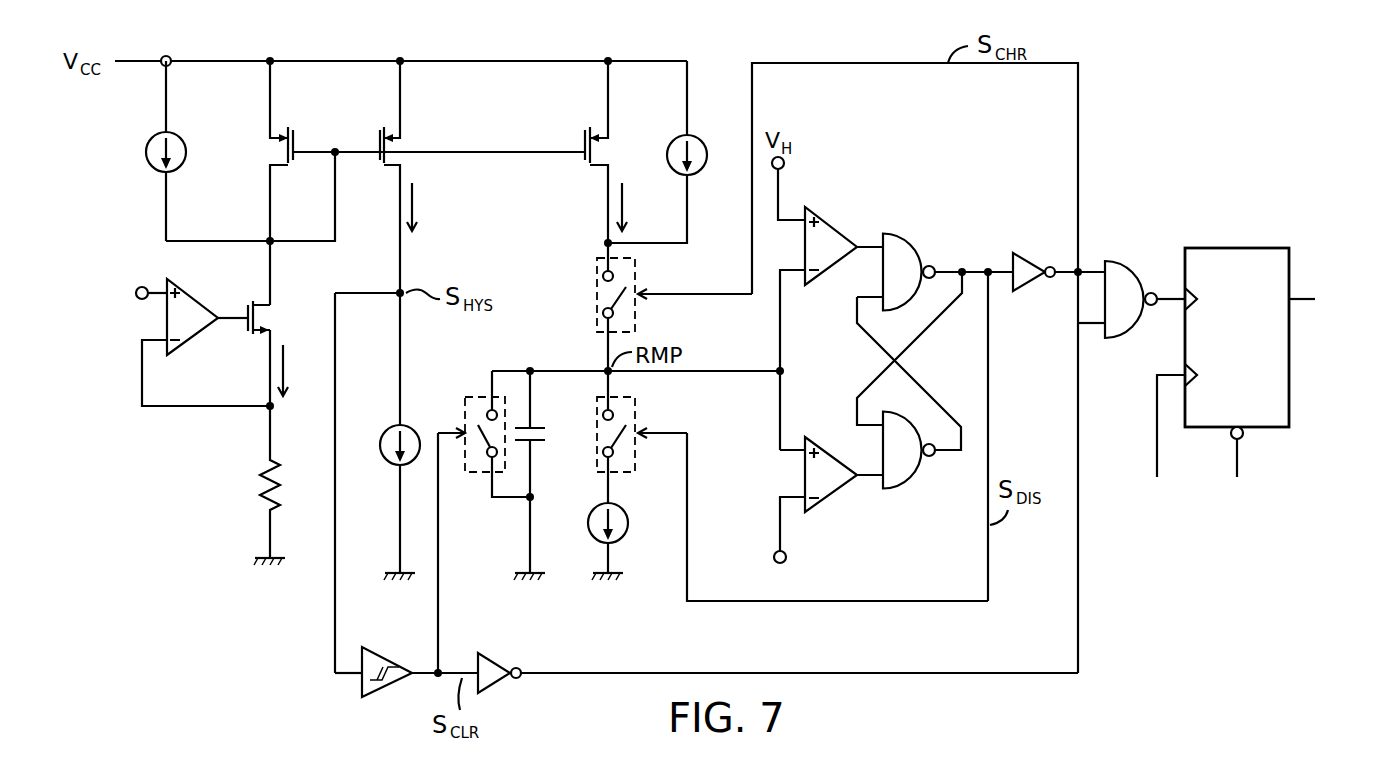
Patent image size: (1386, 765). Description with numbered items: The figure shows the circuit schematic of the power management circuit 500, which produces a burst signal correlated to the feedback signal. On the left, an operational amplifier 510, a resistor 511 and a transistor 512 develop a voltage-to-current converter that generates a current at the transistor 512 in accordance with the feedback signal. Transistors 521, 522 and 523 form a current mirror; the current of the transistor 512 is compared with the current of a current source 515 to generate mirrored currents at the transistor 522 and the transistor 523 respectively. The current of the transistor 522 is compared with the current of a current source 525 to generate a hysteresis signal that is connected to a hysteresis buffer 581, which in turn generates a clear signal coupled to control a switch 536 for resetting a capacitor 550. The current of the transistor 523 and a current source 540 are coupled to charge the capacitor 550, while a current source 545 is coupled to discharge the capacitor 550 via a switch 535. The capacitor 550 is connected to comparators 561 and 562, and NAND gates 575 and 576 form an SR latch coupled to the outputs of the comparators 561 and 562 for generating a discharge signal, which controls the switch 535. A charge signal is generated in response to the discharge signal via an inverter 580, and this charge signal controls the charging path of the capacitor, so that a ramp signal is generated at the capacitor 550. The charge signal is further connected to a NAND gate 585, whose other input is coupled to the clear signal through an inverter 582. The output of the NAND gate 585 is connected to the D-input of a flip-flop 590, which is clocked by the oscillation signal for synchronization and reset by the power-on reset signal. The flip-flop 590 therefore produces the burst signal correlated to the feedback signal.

The power management circuit 500 is at (1258, 67).
The operational amplifier 510 is at (192, 295).
The resistor 511 is at (259, 479).
The transistor 512 is at (268, 313).
The current source 515 is at (147, 153).
The transistor 521 is at (270, 153).
The transistor 522 is at (402, 145).
The transistor 523 is at (607, 155).
The current source 525 is at (381, 447).
The switch 535 is at (640, 412).
The switch 536 is at (596, 276).
The current source 540 is at (708, 155).
The current source 545 is at (628, 523).
The capacitor 550 is at (547, 434).
The comparator 561 is at (832, 224).
The comparator 562 is at (830, 497).
The NAND gate 575 is at (897, 233).
The NAND gate 576 is at (895, 487).
The inverter 580 is at (1030, 252).
The hysteresis buffer 581 is at (389, 688).
The inverter 582 is at (497, 657).
The NAND gate 585 is at (1118, 262).
The flip-flop 590 is at (1237, 248).